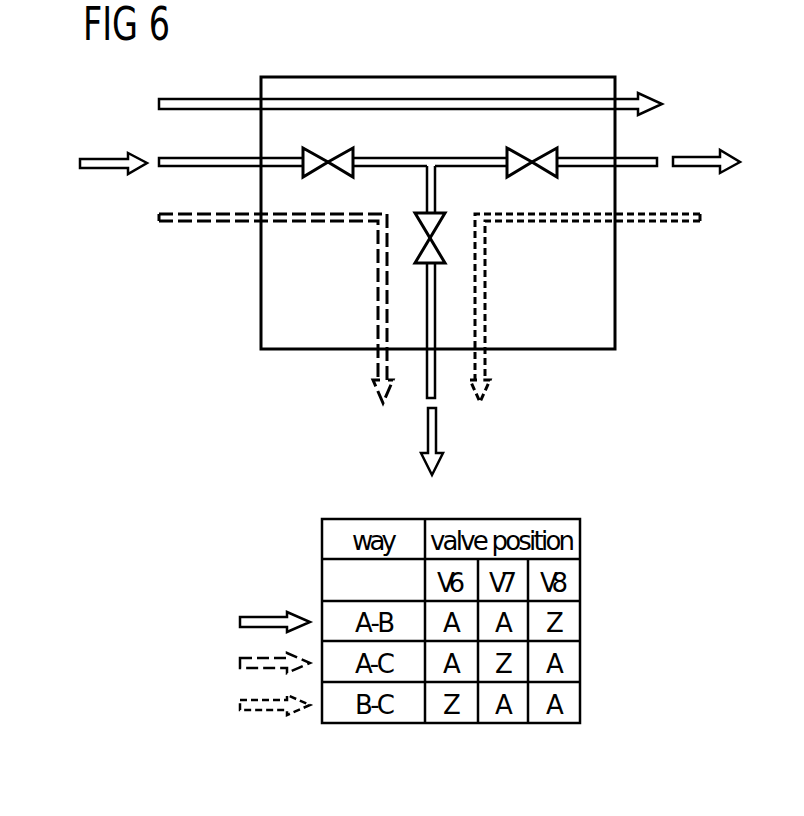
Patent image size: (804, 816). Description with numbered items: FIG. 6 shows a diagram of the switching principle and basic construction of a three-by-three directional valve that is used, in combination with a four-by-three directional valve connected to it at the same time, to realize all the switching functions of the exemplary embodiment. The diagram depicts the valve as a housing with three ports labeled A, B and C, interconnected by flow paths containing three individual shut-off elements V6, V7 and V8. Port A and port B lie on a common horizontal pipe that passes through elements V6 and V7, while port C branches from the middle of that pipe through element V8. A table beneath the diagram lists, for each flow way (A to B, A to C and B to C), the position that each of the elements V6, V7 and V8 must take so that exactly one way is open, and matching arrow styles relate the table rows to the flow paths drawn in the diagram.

The valve V6 is at (354, 152).
The valve V7 is at (506, 152).
The valve V8 is at (440, 265).
The port A is at (113, 149).
The port B is at (706, 148).
The port C is at (439, 441).